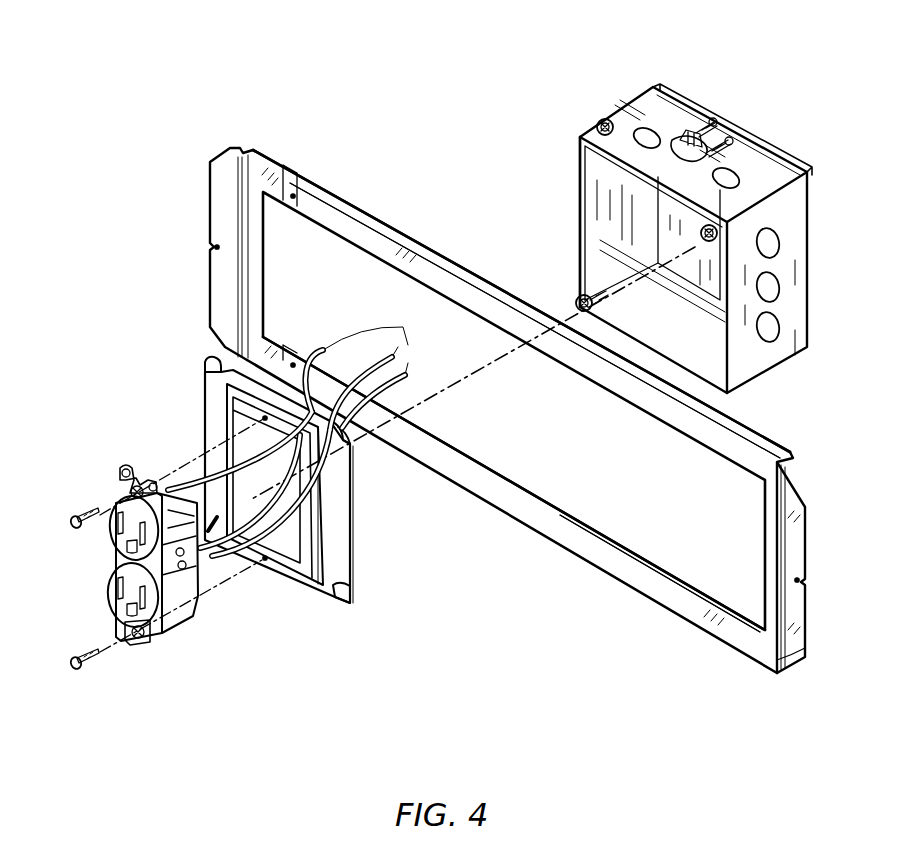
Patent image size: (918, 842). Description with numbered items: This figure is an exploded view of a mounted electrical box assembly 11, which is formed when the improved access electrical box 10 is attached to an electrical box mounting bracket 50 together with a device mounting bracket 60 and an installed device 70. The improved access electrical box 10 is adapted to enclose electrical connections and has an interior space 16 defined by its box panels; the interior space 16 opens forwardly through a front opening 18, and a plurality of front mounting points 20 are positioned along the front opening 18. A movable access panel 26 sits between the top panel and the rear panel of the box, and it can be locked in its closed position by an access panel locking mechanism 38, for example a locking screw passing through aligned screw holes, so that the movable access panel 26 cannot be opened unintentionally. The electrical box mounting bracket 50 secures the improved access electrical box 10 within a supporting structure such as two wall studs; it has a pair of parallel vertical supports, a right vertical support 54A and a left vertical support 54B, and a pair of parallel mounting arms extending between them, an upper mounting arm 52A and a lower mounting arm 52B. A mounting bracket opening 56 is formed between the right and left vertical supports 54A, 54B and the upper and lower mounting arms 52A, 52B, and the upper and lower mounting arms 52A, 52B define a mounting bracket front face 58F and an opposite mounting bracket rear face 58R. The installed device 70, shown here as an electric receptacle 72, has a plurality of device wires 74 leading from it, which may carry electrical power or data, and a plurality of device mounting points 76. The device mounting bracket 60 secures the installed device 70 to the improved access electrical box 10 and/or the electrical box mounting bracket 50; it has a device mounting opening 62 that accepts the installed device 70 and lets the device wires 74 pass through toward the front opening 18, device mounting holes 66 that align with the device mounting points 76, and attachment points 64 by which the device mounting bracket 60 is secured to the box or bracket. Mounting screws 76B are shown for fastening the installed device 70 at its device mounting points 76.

The improved access electrical box 10 is at (760, 82).
The mounted electrical box assembly 11 is at (500, 652).
The interior space 16 is at (590, 165).
The front opening 18 is at (577, 233).
The front mounting points 20 is at (712, 226).
The movable access panel 26 is at (634, 112).
The access panel locking mechanism 38 is at (596, 122).
The electrical box mounting bracket 50 is at (182, 179).
The upper mounting arm 52A is at (380, 210).
The lower mounting arm 52B is at (468, 490).
The right vertical support 54A is at (768, 657).
The left vertical support 54B is at (210, 291).
The mounting bracket opening 56 is at (327, 226).
The mounting bracket rear face 58R is at (644, 416).
The mounting bracket front face 58F is at (688, 427).
The device mounting bracket 60 is at (352, 606).
The device mounting opening 62 is at (292, 590).
The attachment points 64 is at (206, 363).
The device mounting holes 66 is at (262, 416).
The installed device 70 is at (178, 612).
The electric receptacle 72 is at (111, 600).
The device wires 74 is at (405, 332).
The device mounting points 76 is at (140, 483).
The mounting screw 76B is at (86, 515).